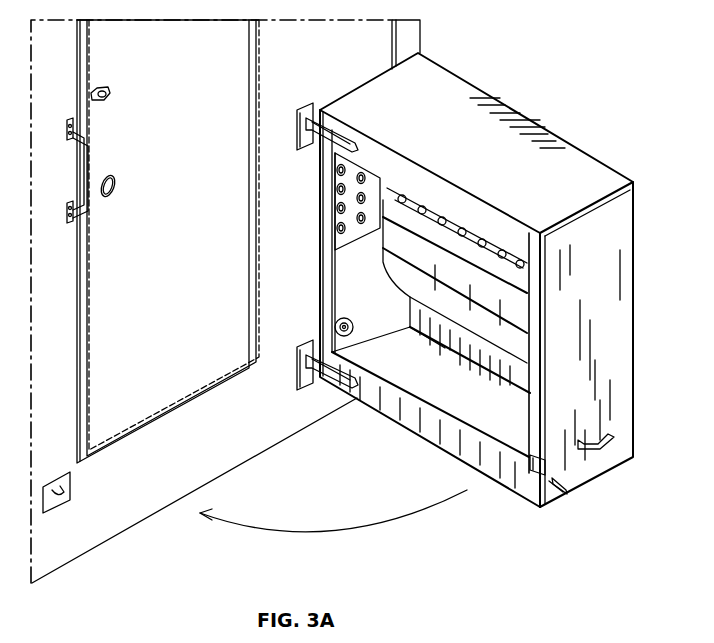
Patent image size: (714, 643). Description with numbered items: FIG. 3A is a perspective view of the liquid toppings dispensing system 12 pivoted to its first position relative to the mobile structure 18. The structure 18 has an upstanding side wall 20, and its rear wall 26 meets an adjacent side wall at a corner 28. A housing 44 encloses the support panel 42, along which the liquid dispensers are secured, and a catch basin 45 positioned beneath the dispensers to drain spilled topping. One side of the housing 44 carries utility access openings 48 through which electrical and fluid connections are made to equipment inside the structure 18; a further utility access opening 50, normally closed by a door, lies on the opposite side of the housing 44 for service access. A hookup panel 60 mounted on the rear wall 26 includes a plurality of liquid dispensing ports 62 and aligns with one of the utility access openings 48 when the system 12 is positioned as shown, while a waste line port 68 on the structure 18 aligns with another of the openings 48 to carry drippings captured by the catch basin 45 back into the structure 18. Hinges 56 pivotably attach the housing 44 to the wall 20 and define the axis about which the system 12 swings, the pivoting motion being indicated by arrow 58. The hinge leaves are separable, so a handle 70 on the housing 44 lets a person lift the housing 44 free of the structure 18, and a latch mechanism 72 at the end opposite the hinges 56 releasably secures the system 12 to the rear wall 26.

The liquid toppings dispensing system 12 is at (647, 171).
The mobile structure 18 is at (91, 564).
The upstanding side wall 20 is at (250, 458).
The rear wall 26 is at (320, 64).
The corner 28 is at (422, 33).
The support panel 42 is at (516, 294).
The housing 44 is at (632, 225).
The catch basin 45 is at (516, 338).
The utility access openings 48 is at (334, 232).
The utility access opening 50 is at (433, 408).
The hinges 56 is at (306, 104).
The arrow 58 is at (324, 534).
The hookup panel 60 is at (335, 180).
The liquid dispensing ports 62 is at (335, 213).
The waste line port 68 is at (334, 314).
The handle 70 is at (620, 434).
The latch mechanism 72 is at (62, 498).